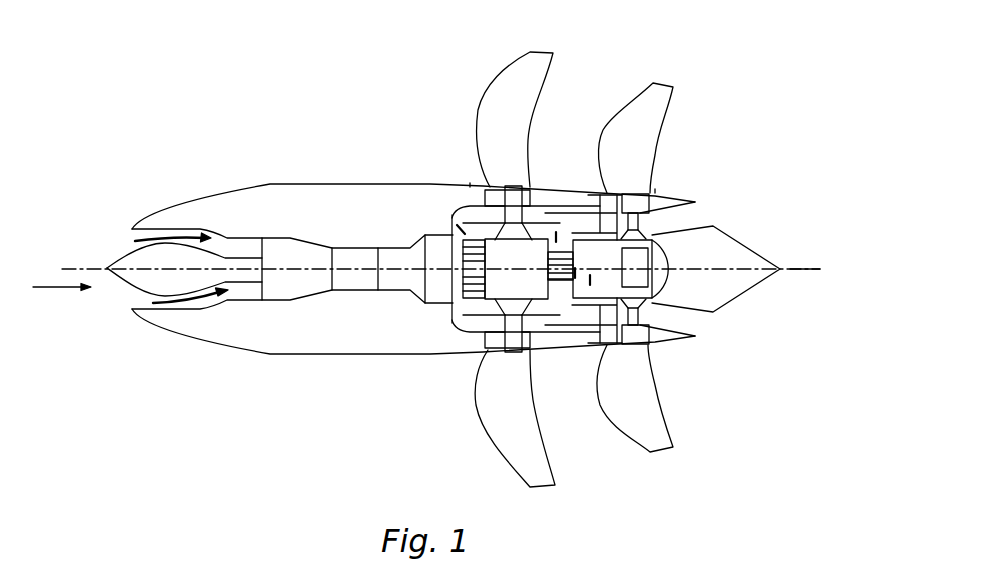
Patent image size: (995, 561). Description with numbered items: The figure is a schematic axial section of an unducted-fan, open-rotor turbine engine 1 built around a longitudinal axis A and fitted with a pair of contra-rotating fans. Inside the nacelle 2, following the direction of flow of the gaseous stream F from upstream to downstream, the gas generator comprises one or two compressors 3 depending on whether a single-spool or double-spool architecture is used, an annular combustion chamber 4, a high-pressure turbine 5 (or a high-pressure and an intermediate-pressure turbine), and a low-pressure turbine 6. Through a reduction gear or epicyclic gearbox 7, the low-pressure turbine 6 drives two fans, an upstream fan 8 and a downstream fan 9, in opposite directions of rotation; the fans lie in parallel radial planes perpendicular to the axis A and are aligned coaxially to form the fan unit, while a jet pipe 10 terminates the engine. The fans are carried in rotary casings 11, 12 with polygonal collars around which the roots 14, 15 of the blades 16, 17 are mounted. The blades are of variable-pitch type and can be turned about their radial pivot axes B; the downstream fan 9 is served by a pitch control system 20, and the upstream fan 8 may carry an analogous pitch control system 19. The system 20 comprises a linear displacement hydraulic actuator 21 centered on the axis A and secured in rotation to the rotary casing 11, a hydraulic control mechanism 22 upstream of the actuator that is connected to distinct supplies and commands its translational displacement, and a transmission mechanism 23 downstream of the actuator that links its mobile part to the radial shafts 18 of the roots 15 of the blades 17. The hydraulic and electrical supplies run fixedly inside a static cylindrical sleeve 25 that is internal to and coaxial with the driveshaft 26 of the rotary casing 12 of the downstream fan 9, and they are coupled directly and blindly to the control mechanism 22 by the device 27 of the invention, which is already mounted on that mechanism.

The turbine engine 1 is at (163, 168).
The nacelle 2 is at (307, 203).
The compressors 3 is at (303, 283).
The annular combustion chamber 4 is at (365, 283).
The high-pressure turbine 5 is at (406, 283).
The low-pressure turbine 6 is at (444, 283).
The reduction gear 7 is at (462, 236).
The upstream fan 8 is at (488, 447).
The downstream fan 9 is at (665, 425).
The jet pipe 10 is at (747, 295).
The rotary casing 11 is at (477, 343).
The rotary casing 12 is at (603, 423).
The blade roots 14 is at (500, 188).
The blade roots 15 is at (630, 193).
The blades 16 is at (543, 57).
The blades 17 is at (662, 86).
The radial shafts 18 is at (466, 187).
The pitch control system 19 is at (528, 283).
The pitch control system 20 is at (587, 193).
The linear displacement hydraulic actuator 21 is at (660, 300).
The hydraulic control mechanism 22 is at (550, 345).
The transmission mechanism 23 is at (652, 233).
The static cylindrical sleeve 25 is at (546, 350).
The driveshaft 26 is at (541, 222).
The coupling device 27 is at (547, 350).
The longitudinal axis A is at (797, 264).
The radial pivot axes B is at (513, 355).
The gaseous stream F is at (50, 288).